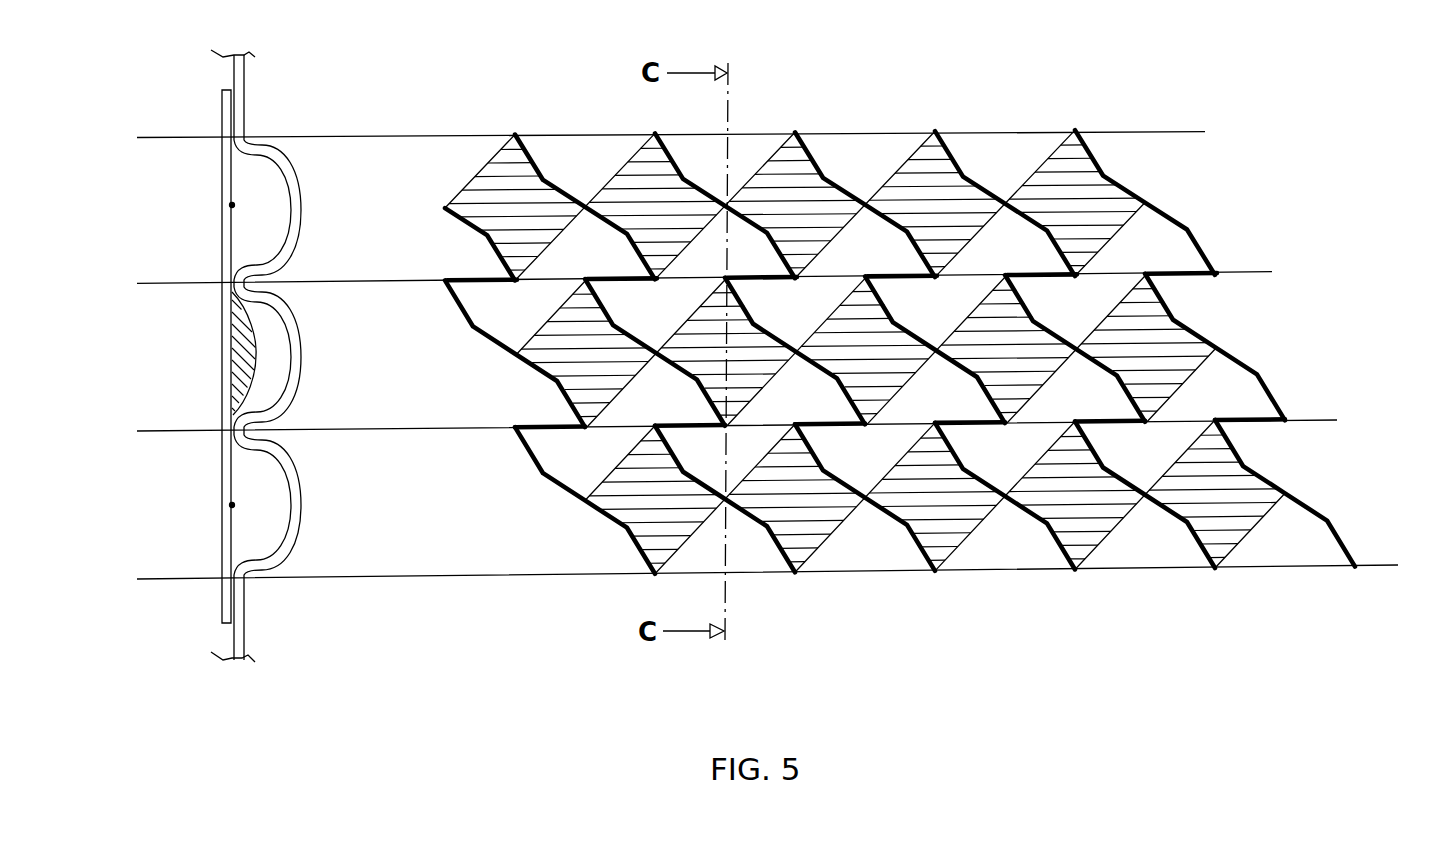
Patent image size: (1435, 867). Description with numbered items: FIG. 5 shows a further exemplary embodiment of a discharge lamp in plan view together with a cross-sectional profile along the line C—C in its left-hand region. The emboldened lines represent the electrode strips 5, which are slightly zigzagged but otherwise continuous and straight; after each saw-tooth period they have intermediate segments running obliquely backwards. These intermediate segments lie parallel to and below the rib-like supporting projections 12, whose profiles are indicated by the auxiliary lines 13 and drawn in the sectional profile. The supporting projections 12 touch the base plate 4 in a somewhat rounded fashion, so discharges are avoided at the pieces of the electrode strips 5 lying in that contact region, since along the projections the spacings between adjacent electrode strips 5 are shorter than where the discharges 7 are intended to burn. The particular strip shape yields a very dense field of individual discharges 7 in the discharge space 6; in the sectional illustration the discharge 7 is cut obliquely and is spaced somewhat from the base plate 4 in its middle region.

The base plate 4 is at (222, 241).
The electrode strips 5 is at (983, 187).
The discharge space 6 is at (252, 184).
The individual discharge 7 is at (246, 360).
The rib-like supporting projections 12 is at (252, 270).
The auxiliary lines 13 is at (431, 137).